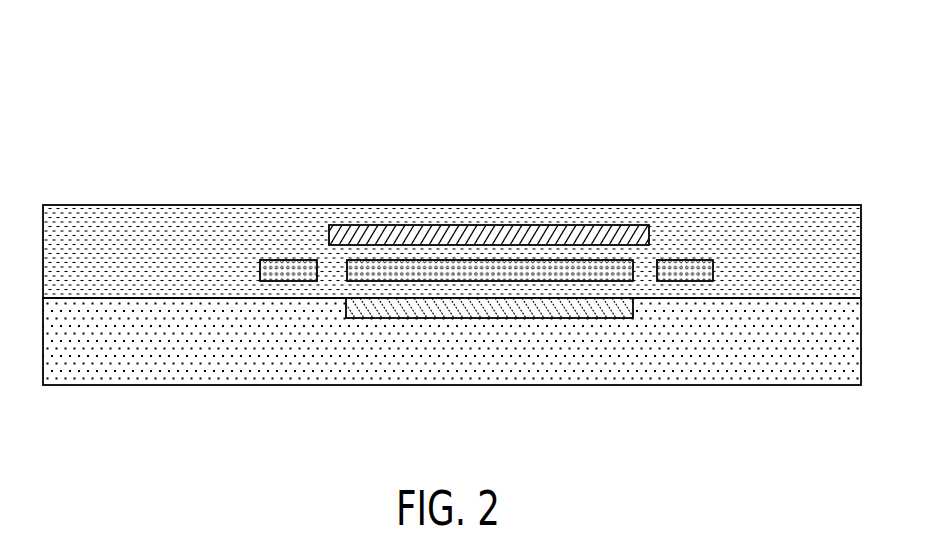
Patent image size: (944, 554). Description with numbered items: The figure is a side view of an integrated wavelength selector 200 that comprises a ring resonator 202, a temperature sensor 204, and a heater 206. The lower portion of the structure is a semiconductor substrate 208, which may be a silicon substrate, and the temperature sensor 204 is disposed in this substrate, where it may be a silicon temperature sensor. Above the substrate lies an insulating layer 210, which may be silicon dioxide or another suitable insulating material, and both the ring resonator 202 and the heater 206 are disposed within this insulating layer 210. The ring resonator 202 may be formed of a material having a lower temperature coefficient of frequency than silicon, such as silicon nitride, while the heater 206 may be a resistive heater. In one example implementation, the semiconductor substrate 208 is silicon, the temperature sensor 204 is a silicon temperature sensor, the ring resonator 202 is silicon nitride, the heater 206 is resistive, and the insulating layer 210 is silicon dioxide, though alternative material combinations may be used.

The integrated wavelength selector 200 is at (120, 81).
The ring resonator 202 is at (723, 261).
The temperature sensor 204 is at (362, 310).
The heater 206 is at (575, 233).
The semiconductor substrate 208 is at (73, 360).
The insulating layer 210 is at (73, 225).